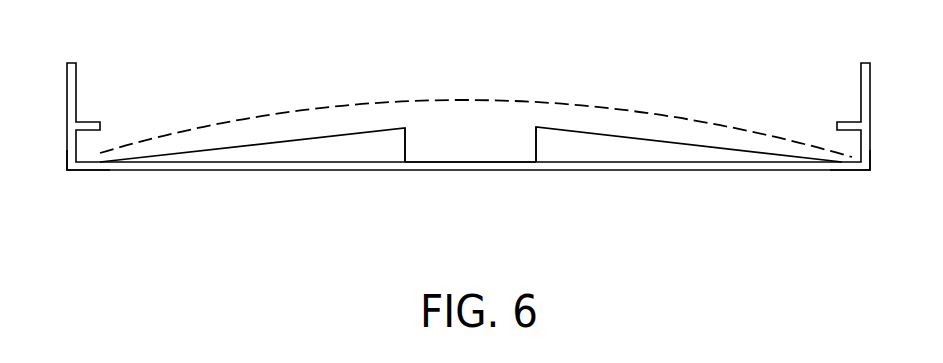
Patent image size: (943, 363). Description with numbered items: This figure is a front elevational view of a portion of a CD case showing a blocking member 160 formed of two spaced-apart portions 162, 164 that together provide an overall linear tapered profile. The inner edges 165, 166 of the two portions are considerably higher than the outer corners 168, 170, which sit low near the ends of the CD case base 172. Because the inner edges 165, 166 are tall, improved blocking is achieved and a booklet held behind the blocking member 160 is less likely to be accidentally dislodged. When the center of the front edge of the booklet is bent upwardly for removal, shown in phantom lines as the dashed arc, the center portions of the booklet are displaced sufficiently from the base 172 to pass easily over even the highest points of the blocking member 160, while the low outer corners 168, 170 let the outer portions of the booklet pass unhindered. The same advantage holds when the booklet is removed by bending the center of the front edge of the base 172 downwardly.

The blocking member 160 is at (500, 75).
The first portion of blocking member 162 is at (313, 147).
The second portion of blocking member 164 is at (652, 147).
The inner edge 165 is at (407, 144).
The inner edge 166 is at (535, 146).
The outer corner 168 is at (106, 151).
The outer corner 170 is at (838, 153).
The CD case base 172 is at (479, 162).